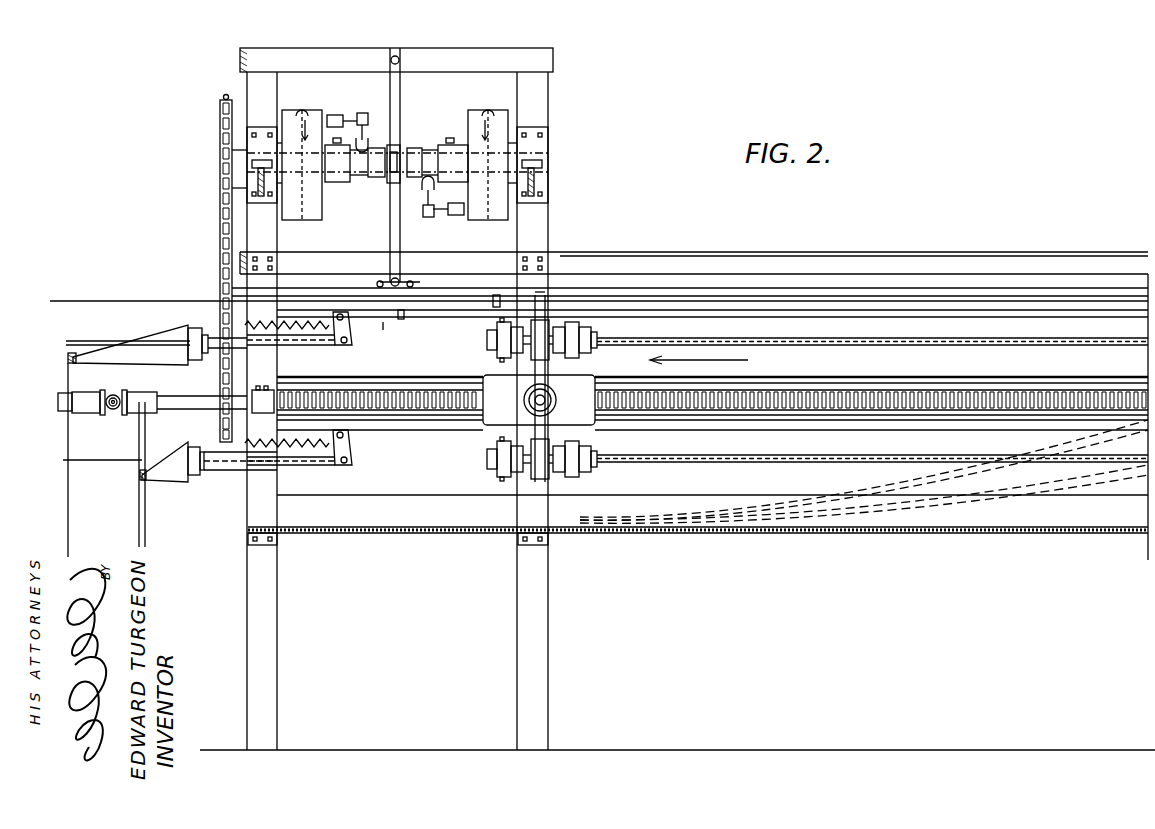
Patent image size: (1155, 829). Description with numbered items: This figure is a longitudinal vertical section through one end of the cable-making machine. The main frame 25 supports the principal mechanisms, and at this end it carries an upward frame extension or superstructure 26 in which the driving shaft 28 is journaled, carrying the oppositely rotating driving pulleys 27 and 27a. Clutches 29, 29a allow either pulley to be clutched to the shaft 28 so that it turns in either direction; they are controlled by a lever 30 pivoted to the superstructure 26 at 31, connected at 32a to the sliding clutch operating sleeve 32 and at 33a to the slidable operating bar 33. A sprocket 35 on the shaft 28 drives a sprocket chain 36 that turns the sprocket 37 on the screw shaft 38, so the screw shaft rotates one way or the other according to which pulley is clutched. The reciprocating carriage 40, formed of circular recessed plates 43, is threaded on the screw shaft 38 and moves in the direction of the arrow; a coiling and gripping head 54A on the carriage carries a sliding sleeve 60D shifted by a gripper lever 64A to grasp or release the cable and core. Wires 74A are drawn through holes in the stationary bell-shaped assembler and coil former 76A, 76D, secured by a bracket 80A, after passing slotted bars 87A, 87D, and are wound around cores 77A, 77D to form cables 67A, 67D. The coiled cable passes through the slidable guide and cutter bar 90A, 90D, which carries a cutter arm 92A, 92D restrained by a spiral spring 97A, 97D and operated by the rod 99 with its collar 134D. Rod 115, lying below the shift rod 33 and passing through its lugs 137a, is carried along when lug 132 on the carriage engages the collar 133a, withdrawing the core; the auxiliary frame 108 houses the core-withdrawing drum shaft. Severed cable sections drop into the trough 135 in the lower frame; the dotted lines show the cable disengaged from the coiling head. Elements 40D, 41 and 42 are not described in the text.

The main frame 25 is at (893, 262).
The upward frame extension or superstructure 26 is at (540, 93).
The driving pulley 27 is at (288, 112).
The driving pulley 27a is at (485, 118).
The driving shaft 28 is at (445, 150).
The clutch 29 is at (335, 115).
The clutch 29a is at (455, 218).
The lever 30 is at (390, 213).
The pivot 31 is at (399, 58).
The sliding clutch operating sleeve 32 is at (372, 176).
The connection 32a is at (399, 150).
The slidable operating bar 33 is at (607, 288).
The connection 33a is at (415, 285).
The sprocket 35 is at (225, 98).
The sprocket chain or belt 36 is at (218, 222).
The sprocket or pulley 37 is at (250, 417).
The screw shaft 38 is at (392, 391).
The reciprocating carriage 40 is at (533, 370).
The coupling 40D is at (597, 353).
The pinion hub 41 is at (523, 393).
The rack guide 42 is at (790, 379).
The recessed plate 43 is at (490, 410).
The coiling and gripping head 54A is at (596, 455).
The sleeve 60D is at (490, 338).
The gripper lever 64A is at (492, 466).
The cable 67A is at (810, 458).
The cable 67D is at (676, 346).
The wire 74A is at (68, 540).
The bell-shaped assembler and coil former 76A is at (192, 478).
The bell-shaped assembler and coil former 76D is at (188, 328).
The core 77A is at (104, 461).
The core 77D is at (70, 342).
The bracket 80A is at (228, 471).
The slotted bar 87A is at (140, 476).
The slotted bar 87D is at (78, 360).
The slidable guide and cutter bar 90A is at (311, 467).
The slidable guide and cutter bar 90D is at (298, 346).
The cutter arm 92A is at (352, 445).
The cutter arm 92D is at (350, 336).
The spiral spring 97A is at (284, 442).
The spiral spring 97D is at (284, 330).
The rod 99 is at (808, 317).
The auxiliary frame 108 is at (114, 410).
The rod 115 is at (668, 299).
The lug 132 is at (546, 292).
The collar 133a is at (496, 294).
The collar 134D is at (404, 313).
The trough or receptacle 135 is at (815, 535).
The projection or lug 137a is at (392, 332).